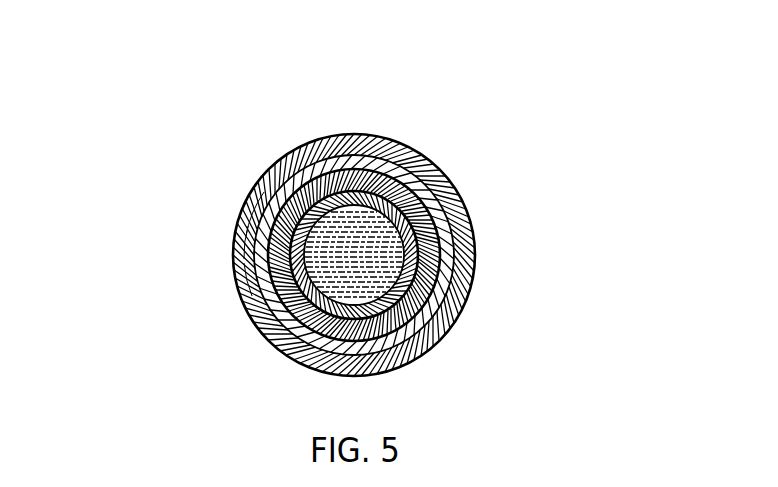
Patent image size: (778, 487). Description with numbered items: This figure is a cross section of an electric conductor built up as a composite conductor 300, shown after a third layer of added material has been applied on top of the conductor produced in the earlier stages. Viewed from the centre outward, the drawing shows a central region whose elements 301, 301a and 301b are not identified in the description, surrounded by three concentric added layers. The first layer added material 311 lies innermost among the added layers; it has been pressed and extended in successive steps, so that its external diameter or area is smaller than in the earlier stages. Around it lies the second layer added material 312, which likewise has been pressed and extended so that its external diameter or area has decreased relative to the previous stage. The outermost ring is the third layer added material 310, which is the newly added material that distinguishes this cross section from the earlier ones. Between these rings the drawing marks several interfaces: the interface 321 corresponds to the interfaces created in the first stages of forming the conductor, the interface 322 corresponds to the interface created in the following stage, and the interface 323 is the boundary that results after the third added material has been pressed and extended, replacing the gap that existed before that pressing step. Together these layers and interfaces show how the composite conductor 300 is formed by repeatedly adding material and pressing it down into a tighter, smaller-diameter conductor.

The composite conductor 300 is at (230, 121).
The core member 301 is at (553, 30).
The inner core 301a is at (360, 215).
The core coating layer 301b is at (400, 210).
The third layer added material 310 is at (450, 297).
The first layer added material 311 is at (440, 220).
The second layer added material 312 is at (447, 257).
The interface 321 is at (255, 215).
The interface 322 is at (257, 248).
The interface 323 is at (260, 278).